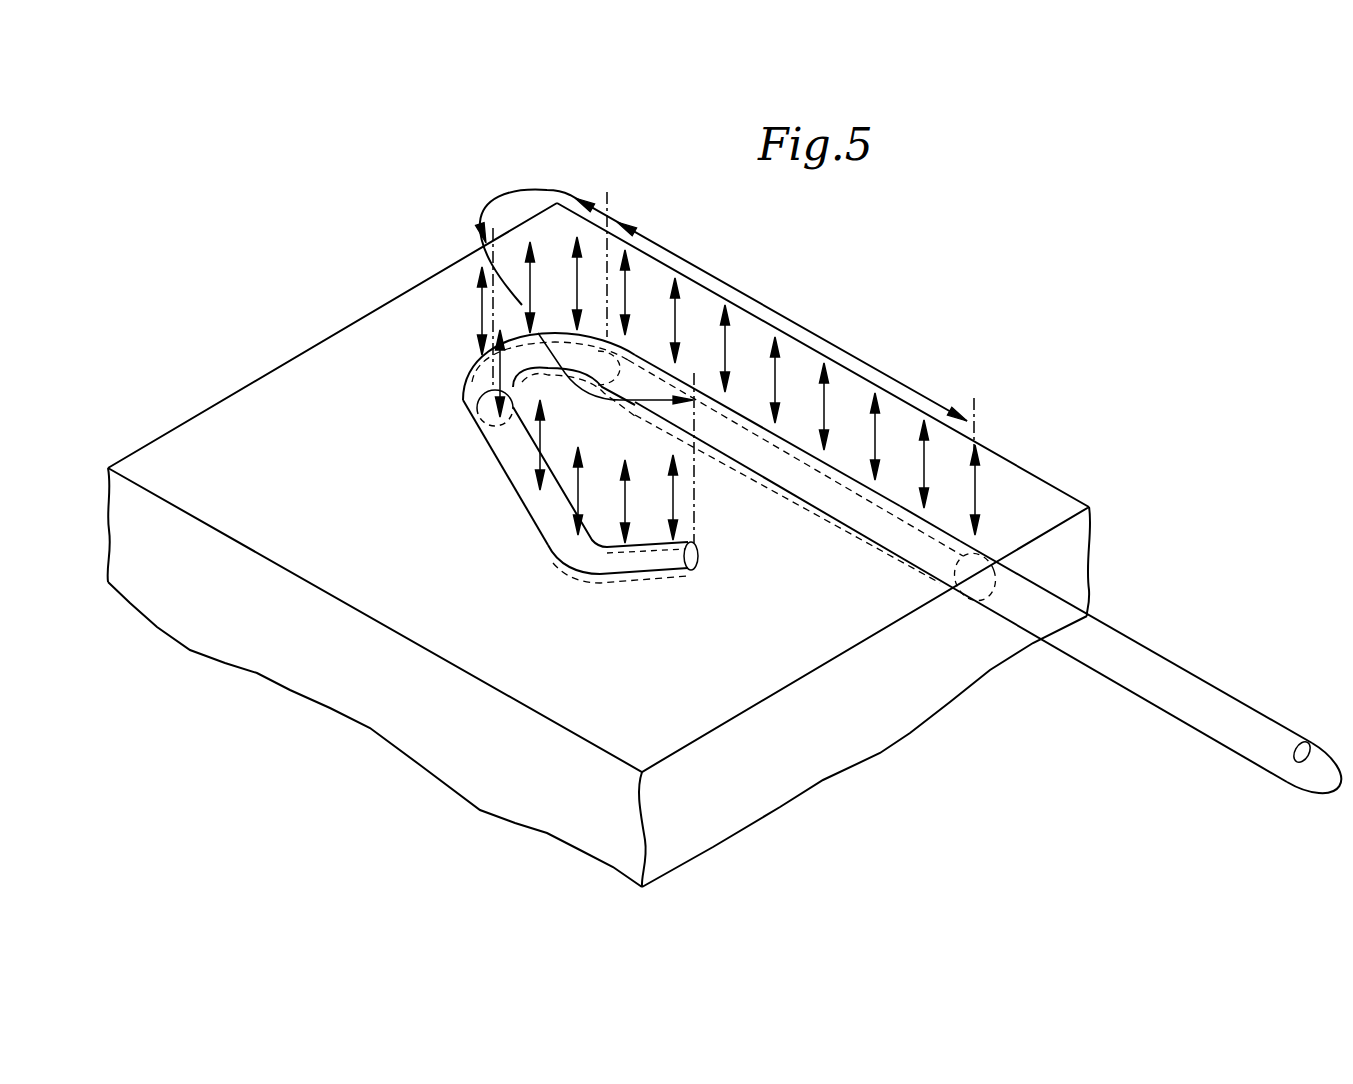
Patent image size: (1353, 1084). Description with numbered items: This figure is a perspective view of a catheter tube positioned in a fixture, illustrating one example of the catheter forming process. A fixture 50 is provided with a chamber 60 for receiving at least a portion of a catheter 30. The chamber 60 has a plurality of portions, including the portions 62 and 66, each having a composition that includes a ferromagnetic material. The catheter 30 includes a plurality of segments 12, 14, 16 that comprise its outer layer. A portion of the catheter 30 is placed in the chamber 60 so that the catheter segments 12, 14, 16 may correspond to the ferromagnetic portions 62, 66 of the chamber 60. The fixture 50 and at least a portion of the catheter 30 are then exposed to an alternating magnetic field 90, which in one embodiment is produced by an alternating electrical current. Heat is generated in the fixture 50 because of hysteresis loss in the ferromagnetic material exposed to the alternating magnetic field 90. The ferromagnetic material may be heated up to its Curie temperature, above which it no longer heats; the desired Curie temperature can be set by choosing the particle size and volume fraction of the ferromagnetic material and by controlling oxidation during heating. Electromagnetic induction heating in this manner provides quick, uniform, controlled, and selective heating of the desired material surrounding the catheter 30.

The catheter segment 12 is at (558, 477).
The catheter segment 14 is at (475, 385).
The catheter segment 16 is at (943, 528).
The catheter 30 is at (1185, 668).
The fixture 50 is at (580, 827).
The chamber 60 is at (992, 600).
The chamber portion 62 is at (652, 572).
The chamber portion 66 is at (858, 530).
The alternating magnetic field 90 is at (677, 323).